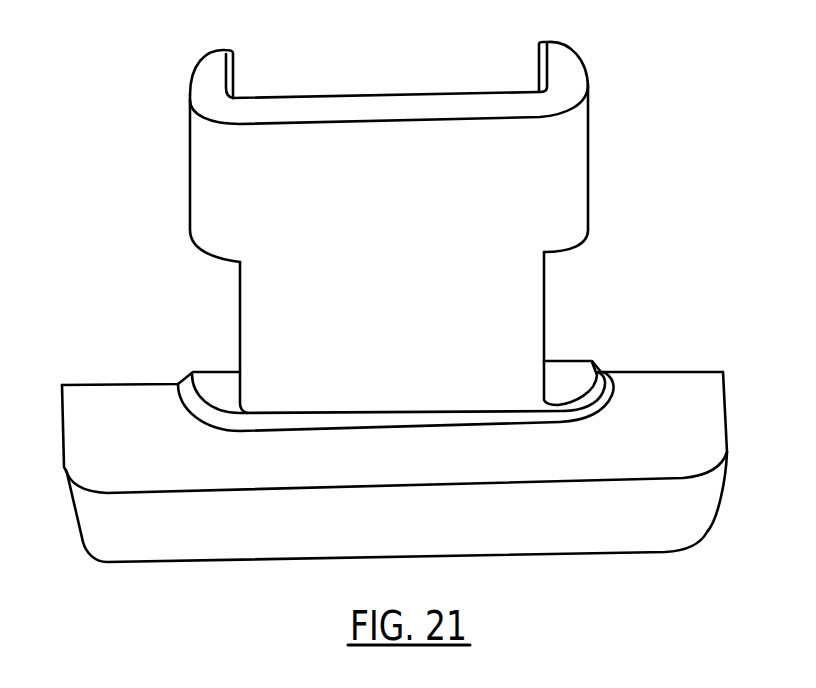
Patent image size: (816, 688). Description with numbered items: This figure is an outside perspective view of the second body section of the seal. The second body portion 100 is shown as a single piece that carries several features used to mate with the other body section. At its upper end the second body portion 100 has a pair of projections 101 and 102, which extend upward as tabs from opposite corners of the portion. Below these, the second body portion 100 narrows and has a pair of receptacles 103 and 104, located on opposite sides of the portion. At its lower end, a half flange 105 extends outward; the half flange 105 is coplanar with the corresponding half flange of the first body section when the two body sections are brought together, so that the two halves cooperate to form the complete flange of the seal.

The second body portion 100 is at (372, 85).
The projection 101 is at (578, 72).
The projection 102 is at (200, 62).
The receptacle 103 is at (544, 316).
The receptacle 104 is at (240, 327).
The half flange 105 is at (675, 388).